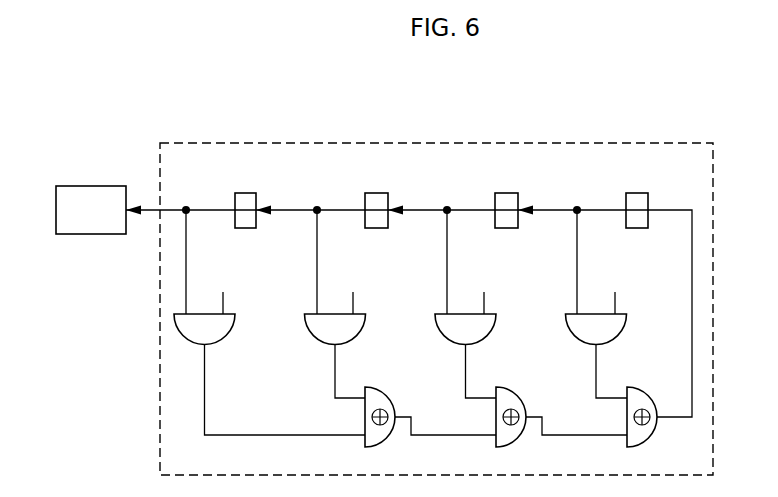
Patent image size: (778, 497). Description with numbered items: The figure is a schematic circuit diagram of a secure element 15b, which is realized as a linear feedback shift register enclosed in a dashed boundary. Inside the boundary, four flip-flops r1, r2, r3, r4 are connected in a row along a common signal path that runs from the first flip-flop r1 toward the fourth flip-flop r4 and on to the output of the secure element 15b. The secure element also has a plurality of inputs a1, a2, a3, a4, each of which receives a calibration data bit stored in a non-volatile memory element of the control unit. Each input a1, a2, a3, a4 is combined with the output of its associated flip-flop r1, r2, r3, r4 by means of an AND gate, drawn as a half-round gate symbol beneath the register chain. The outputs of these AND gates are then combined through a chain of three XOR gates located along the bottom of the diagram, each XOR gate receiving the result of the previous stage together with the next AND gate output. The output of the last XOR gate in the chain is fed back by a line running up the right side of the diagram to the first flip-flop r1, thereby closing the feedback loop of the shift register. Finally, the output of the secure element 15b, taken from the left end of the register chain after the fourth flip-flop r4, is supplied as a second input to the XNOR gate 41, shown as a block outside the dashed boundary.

The secure element 15b is at (633, 143).
The XNOR gate 41 is at (91, 210).
The first flip-flop r1 is at (637, 196).
The flip-flop r2 is at (506, 196).
The flip-flop r3 is at (376, 196).
The flip-flop r4 is at (245, 196).
The input a1 is at (596, 304).
The input a2 is at (465, 304).
The input a3 is at (335, 304).
The input a4 is at (204, 304).